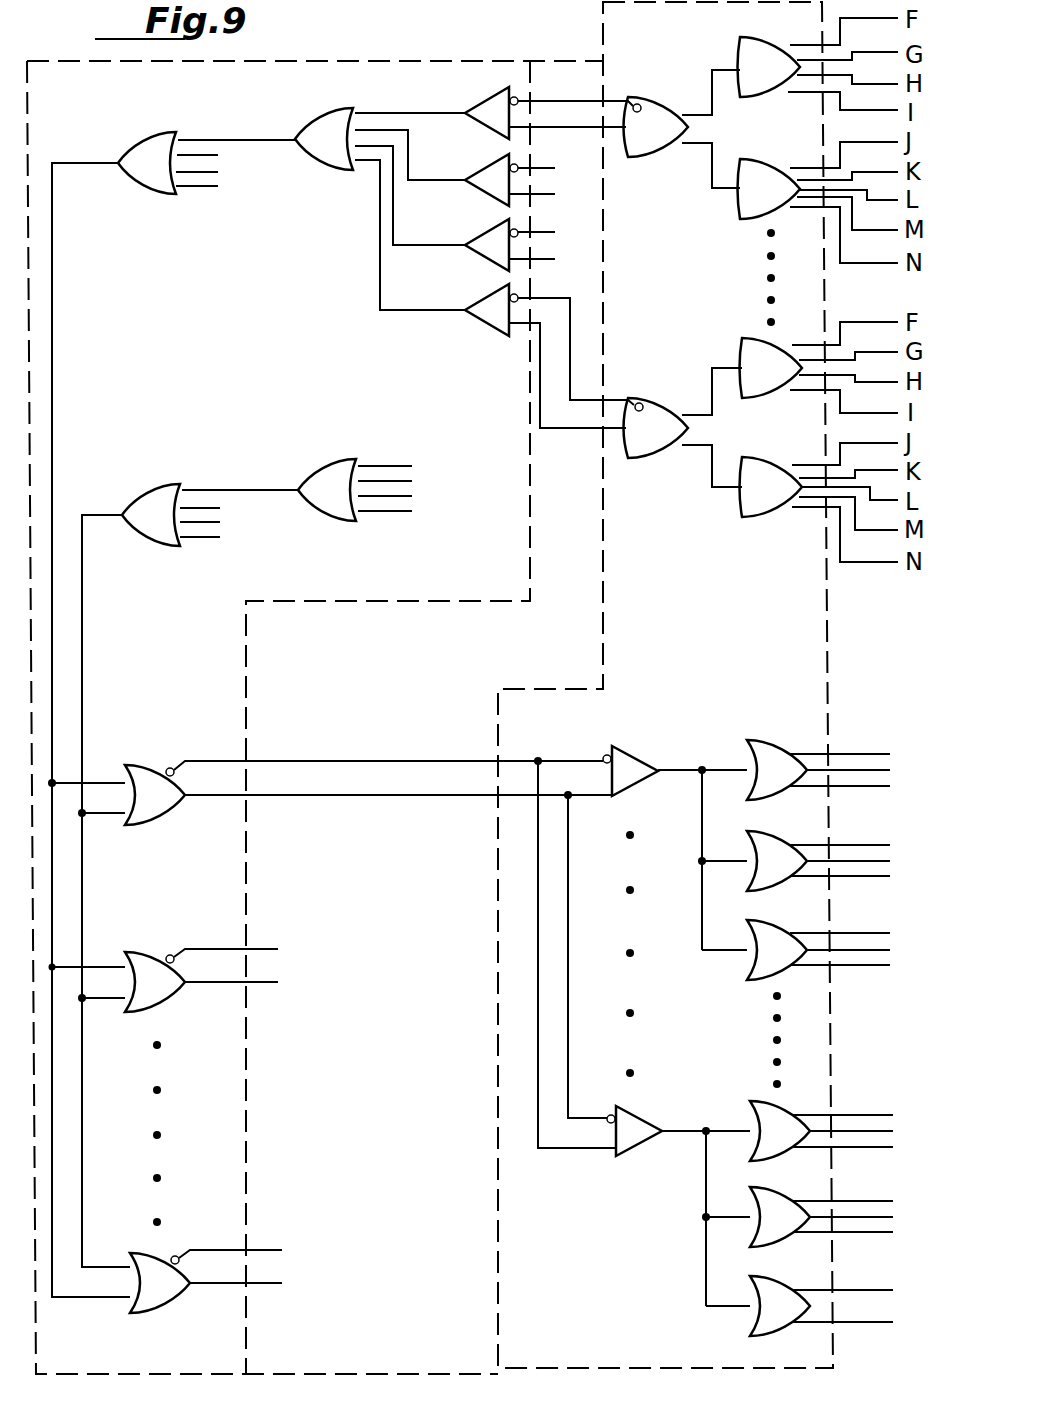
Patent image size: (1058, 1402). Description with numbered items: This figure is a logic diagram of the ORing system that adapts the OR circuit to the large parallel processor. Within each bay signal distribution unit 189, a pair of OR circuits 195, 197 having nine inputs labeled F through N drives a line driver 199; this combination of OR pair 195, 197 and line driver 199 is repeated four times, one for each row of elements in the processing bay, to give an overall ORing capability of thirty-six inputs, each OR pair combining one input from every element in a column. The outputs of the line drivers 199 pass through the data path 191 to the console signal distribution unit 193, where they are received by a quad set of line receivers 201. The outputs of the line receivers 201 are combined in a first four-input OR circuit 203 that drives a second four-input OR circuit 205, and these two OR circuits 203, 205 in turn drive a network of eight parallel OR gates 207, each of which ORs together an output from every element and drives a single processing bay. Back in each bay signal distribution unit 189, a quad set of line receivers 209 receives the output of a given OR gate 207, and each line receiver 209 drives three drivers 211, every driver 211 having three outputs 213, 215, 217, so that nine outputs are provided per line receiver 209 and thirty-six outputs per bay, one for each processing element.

The bay signal distribution unit 189 is at (600, 35).
The data path 191 is at (548, 58).
The console signal distribution unit 193 is at (363, 60).
The OR circuit 195 is at (756, 60).
The OR circuit 197 is at (757, 200).
The line driver 199 is at (654, 155).
The line receiver 201 is at (486, 103).
The first four-input OR circuit 203 is at (327, 164).
The second four-input OR circuit 205 is at (150, 183).
The OR gate 207 is at (140, 770).
The line receiver 209 is at (635, 760).
The driver 211 is at (758, 746).
The output 213 is at (888, 752).
The output 215 is at (888, 770).
The output 217 is at (888, 788).